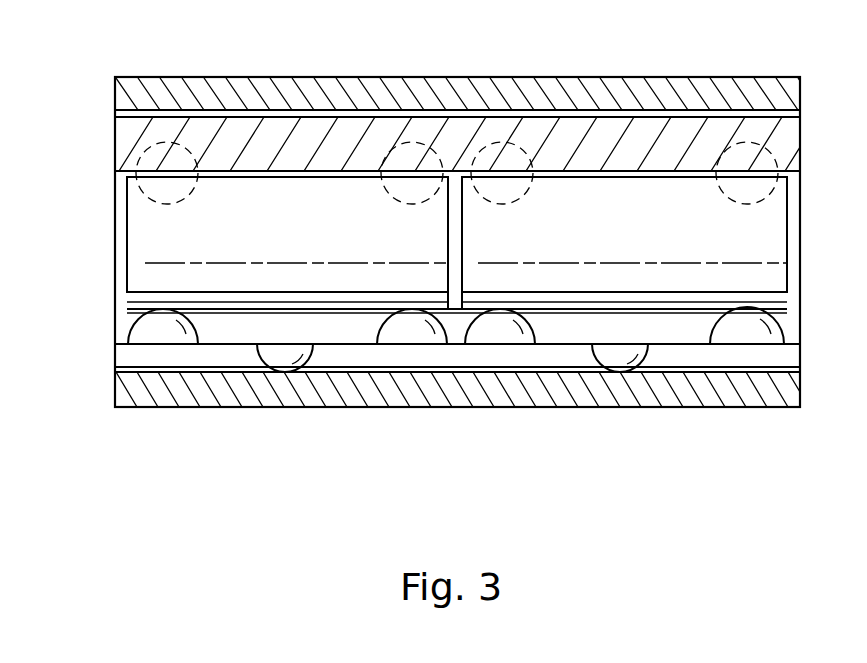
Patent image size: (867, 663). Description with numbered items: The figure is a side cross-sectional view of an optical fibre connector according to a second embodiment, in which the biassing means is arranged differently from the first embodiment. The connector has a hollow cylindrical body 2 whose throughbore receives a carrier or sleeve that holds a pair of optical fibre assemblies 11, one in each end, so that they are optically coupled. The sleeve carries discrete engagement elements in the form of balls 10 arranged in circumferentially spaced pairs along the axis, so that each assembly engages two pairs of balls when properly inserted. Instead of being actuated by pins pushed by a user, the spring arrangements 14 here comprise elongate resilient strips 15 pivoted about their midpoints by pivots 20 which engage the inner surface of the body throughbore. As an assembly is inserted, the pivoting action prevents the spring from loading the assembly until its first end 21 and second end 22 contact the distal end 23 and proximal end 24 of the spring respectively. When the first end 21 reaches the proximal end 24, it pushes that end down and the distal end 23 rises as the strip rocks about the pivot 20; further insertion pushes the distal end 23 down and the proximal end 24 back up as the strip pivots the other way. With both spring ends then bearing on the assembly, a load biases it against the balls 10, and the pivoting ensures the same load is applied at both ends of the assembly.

The hollow cylindrical body 2 is at (665, 102).
The balls 10 is at (151, 122).
The optical fibre assemblies 11 is at (140, 224).
The spring arrangement 14 is at (347, 368).
The elongate resilient strip 15 is at (223, 346).
The pivot 20 is at (285, 356).
The first end of the optical fibre assembly 21 is at (455, 305).
The second end of the optical fibre assembly 22 is at (130, 311).
The distal end of the spring 23 is at (397, 340).
The proximal end of the spring 24 is at (172, 337).